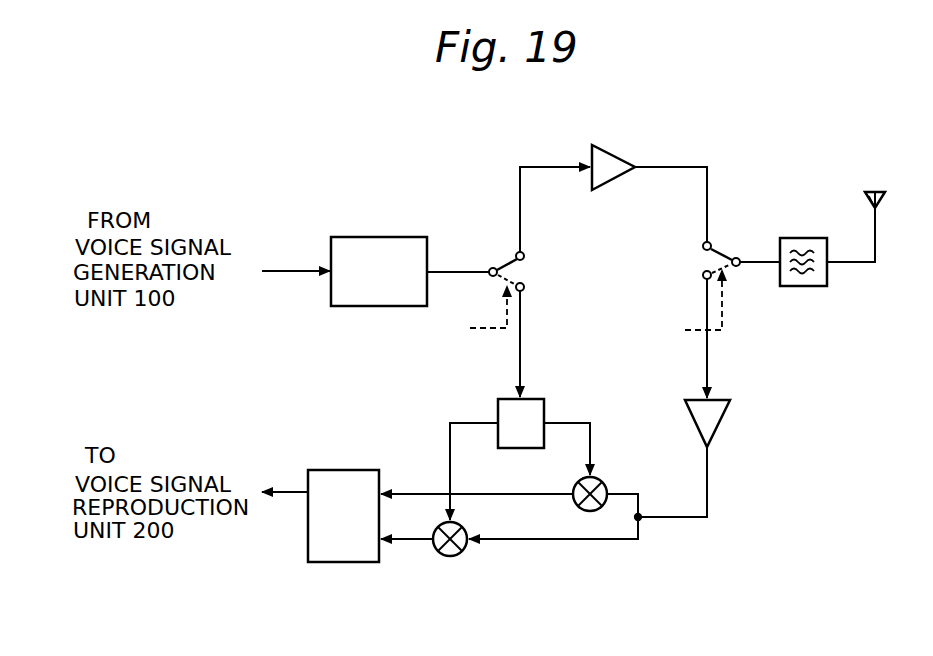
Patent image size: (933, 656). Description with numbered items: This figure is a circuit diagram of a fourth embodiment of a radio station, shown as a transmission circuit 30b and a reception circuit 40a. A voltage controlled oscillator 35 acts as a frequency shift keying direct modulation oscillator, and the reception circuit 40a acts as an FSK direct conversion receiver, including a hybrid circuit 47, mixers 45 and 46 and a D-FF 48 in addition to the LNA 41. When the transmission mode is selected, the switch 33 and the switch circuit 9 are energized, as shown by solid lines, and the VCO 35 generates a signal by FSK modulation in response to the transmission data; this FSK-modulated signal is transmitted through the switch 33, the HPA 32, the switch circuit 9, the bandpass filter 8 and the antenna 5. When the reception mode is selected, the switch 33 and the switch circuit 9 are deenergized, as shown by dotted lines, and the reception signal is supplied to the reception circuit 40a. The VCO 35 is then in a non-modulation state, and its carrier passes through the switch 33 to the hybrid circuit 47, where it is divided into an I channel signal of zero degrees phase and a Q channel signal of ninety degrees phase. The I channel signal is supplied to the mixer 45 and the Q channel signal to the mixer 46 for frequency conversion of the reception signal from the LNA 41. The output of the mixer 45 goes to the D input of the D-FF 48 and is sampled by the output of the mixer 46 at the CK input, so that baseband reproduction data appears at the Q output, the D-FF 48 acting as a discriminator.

The transmission circuit 30b is at (580, 108).
The reception circuit 40a is at (577, 591).
The voltage controlled oscillator 35 is at (383, 237).
The switch 33 is at (532, 265).
The HPA 32 is at (618, 155).
The switch circuit 9 is at (722, 248).
The bandpass filter 8 is at (805, 238).
The antenna 5 is at (880, 192).
The hybrid circuit 47 is at (542, 398).
The mixer 45 is at (605, 478).
The mixer 46 is at (465, 530).
The LNA 41 is at (722, 425).
The D-FF 48 is at (342, 470).